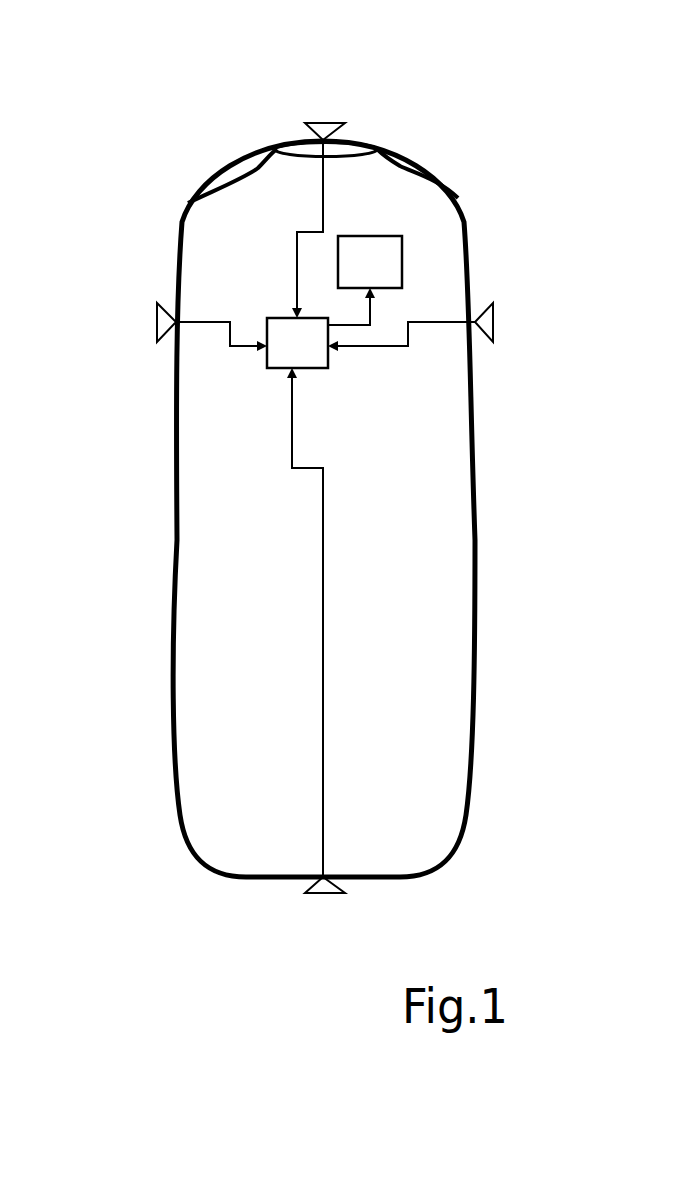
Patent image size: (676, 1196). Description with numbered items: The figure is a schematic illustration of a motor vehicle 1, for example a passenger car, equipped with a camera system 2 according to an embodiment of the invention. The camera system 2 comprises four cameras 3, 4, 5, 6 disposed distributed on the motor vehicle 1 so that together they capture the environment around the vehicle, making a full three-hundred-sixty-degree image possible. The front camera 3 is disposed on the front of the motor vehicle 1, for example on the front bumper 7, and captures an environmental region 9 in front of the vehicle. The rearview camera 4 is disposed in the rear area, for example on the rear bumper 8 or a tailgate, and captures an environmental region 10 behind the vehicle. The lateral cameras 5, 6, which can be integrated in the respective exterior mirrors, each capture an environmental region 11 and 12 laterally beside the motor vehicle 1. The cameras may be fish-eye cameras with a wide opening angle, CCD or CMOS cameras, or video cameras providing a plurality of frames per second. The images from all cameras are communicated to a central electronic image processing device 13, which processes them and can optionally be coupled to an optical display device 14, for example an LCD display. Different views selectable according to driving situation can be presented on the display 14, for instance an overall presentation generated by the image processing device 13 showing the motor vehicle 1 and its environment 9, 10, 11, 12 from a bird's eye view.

The motor vehicle 1 is at (476, 535).
The camera system 2 is at (224, 423).
The front camera 3 is at (333, 123).
The rearview camera 4 is at (325, 894).
The lateral camera 5 is at (157, 322).
The lateral camera 6 is at (493, 322).
The front bumper 7 is at (277, 147).
The rear bumper 8 is at (260, 878).
The environmental region 9 is at (333, 46).
The environmental region 10 is at (339, 1007).
The environmental region 11 is at (77, 418).
The environmental region 12 is at (564, 420).
The central electronic image processing device 13 is at (318, 368).
The optical display device 14 is at (402, 262).